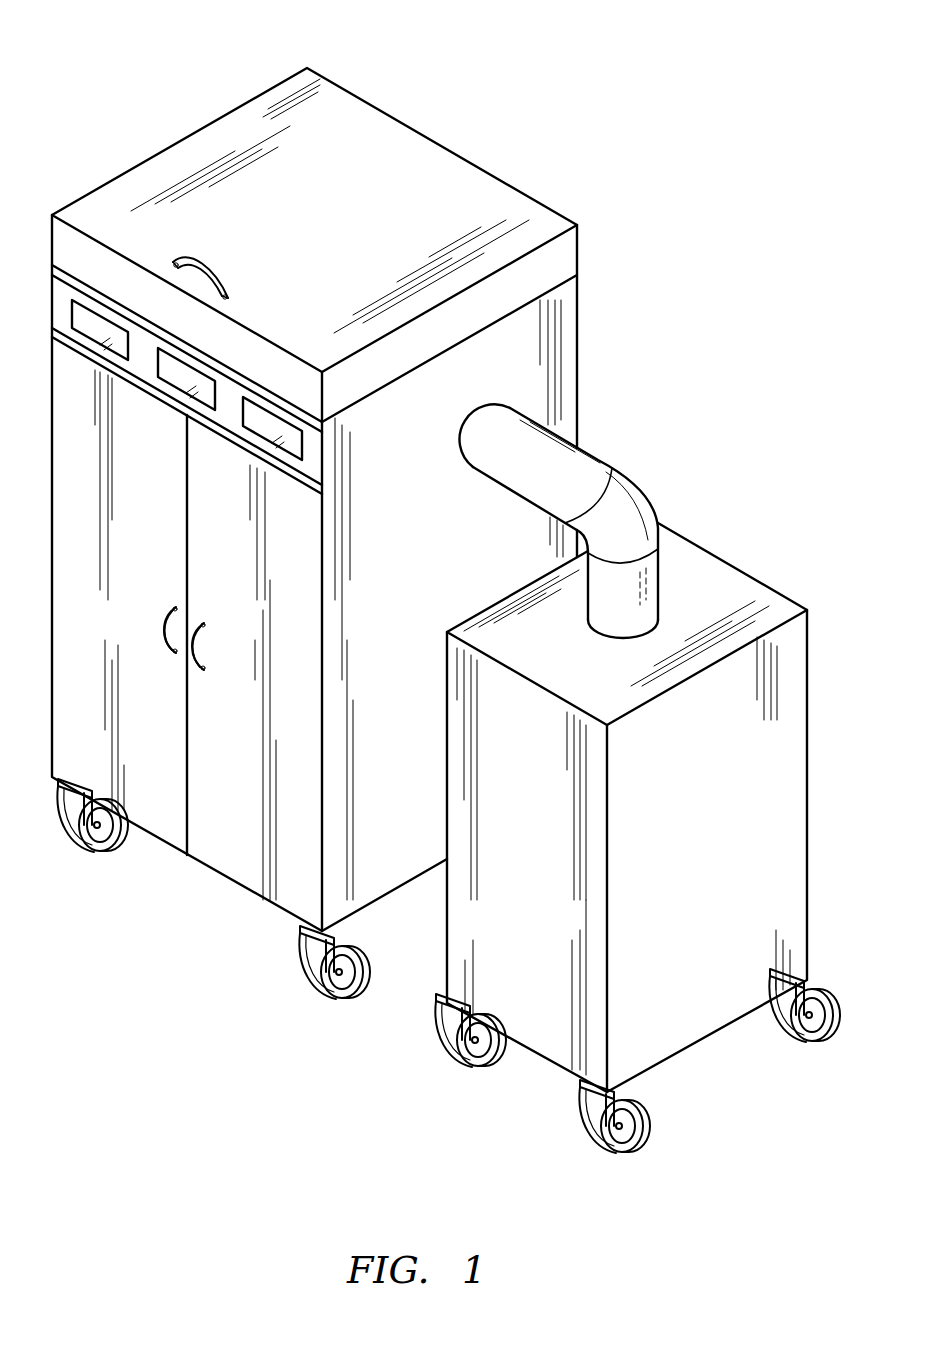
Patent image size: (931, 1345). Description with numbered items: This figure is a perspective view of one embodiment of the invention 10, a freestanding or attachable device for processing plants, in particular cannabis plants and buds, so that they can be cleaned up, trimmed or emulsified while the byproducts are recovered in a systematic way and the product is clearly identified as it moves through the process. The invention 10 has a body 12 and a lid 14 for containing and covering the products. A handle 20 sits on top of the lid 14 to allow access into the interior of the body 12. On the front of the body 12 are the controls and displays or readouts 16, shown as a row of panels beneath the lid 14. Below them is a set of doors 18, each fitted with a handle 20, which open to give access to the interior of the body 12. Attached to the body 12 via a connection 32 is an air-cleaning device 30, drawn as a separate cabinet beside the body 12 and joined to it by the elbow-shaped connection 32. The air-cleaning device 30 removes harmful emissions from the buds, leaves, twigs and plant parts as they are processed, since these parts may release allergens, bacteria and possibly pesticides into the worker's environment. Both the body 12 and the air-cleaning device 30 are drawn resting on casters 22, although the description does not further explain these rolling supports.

The invention 10 is at (167, 86).
The body 12 is at (447, 436).
The lid 14 is at (390, 231).
The controls and displays or readouts 16 is at (232, 393).
The doors 18 is at (157, 536).
The handle 20 is at (203, 672).
The casters 22 is at (90, 855).
The air-cleaning device 30 is at (727, 788).
The connection 32 is at (530, 475).